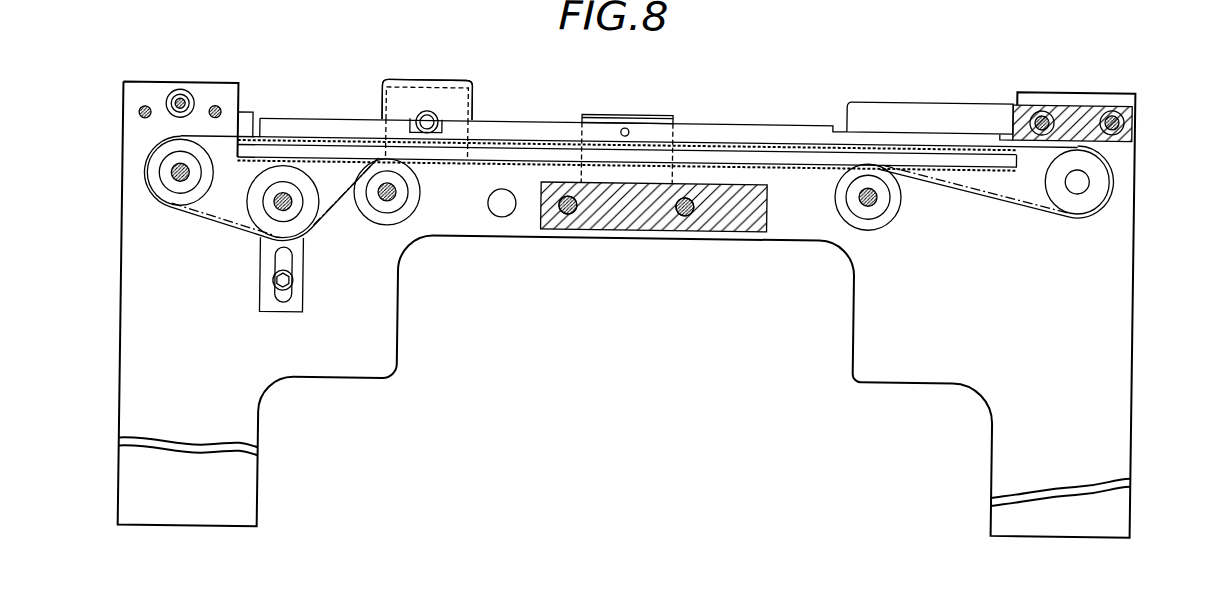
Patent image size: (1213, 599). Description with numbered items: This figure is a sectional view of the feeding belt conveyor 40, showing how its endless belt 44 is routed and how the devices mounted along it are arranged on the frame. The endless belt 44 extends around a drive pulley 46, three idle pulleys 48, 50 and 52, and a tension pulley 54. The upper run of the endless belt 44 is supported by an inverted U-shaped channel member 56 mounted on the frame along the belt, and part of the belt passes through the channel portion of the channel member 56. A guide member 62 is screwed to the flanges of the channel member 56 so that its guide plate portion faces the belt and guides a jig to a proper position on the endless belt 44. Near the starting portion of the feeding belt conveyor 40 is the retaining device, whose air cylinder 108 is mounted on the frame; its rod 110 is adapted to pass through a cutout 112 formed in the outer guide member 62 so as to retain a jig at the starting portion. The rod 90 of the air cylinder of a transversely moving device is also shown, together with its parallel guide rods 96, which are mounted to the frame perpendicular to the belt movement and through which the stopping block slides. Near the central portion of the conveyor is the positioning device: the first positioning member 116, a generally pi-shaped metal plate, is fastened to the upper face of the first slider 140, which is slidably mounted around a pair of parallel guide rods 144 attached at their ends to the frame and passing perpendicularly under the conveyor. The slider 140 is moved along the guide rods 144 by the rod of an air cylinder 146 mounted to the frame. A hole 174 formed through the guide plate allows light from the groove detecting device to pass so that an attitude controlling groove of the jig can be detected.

The feeding belt conveyor 40 is at (1124, 156).
The endless belt 44 is at (1005, 190).
The drive pulley 46 is at (1100, 175).
The idle pulley 48 is at (888, 204).
The idle pulley 50 is at (415, 200).
The idle pulley 52 is at (163, 186).
The tension pulley 54 is at (267, 223).
The channel member 56 is at (784, 148).
The guide member 62 is at (540, 124).
The rod 90 is at (185, 99).
The guide rods 96 is at (138, 114).
The air cylinder 108 is at (448, 87).
The rod 110 is at (438, 118).
The cutout 112 is at (377, 120).
The first positioning member 116 is at (657, 110).
The first slider 140 is at (623, 225).
The guide rods 144 is at (695, 209).
The air cylinder 146 is at (500, 214).
The hole 174 is at (629, 126).